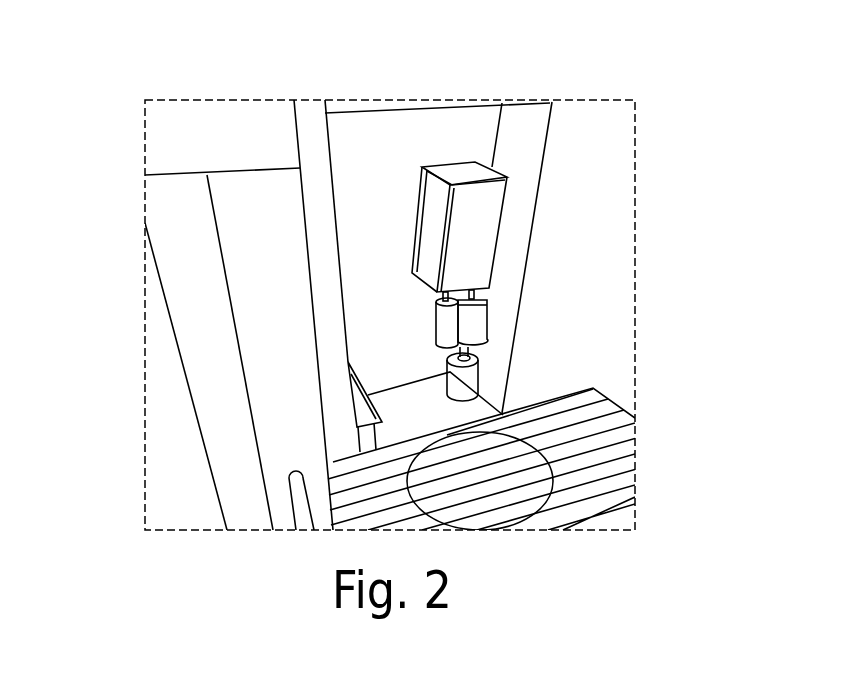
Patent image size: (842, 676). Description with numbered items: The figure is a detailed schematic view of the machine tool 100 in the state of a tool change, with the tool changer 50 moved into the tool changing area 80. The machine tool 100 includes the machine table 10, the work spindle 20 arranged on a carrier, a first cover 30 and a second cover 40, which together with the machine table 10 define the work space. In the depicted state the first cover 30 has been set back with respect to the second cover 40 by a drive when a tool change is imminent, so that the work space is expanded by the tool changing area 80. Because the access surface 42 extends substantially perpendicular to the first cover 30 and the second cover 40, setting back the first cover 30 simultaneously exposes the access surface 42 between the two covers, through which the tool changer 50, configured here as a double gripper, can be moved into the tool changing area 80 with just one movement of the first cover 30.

The machine tool 100 is at (132, 124).
The machine table 10 is at (648, 473).
The work spindle 20 is at (415, 174).
The first cover 30 is at (450, 142).
The second cover 40 is at (614, 220).
The access surface 42 is at (533, 237).
The tool changer 50 is at (467, 323).
The tool changing area 80 is at (421, 418).